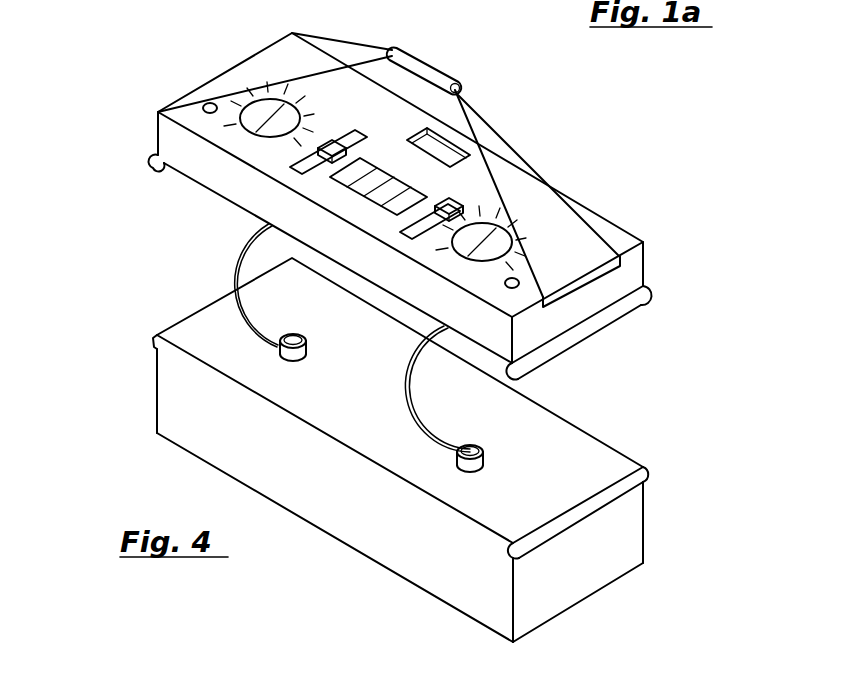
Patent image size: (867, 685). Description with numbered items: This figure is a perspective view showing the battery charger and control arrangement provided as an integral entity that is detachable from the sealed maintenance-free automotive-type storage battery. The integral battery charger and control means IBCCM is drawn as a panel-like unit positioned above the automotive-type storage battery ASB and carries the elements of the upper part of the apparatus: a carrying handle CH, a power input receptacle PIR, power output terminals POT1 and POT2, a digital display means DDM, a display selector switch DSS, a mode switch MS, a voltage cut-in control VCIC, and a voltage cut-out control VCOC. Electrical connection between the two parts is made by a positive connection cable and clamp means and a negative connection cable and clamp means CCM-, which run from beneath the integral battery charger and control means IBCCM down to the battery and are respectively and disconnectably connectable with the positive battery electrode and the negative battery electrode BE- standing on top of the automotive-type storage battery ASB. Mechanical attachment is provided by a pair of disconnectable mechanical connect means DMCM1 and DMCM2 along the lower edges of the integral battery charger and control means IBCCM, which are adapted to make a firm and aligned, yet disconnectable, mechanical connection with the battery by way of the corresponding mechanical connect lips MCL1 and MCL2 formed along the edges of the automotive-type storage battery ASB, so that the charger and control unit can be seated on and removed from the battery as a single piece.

The integral battery charger and control means IBCCM is at (630, 213).
The disconnectable mechanical connect means DMCM1 is at (153, 167).
The disconnectable mechanical connect means DMCM2 is at (620, 317).
The carrying handle CH is at (428, 64).
The power output terminal POT1 is at (208, 103).
The power output terminal POT2 is at (517, 280).
The voltage cut-in control VCIC is at (280, 101).
The voltage cut-out control VCOC is at (510, 222).
The display selector switch DSS is at (350, 138).
The mode switch MS is at (447, 199).
The digital display means DDM is at (372, 162).
The power input receptacle PIR is at (468, 166).
The automotive-type storage battery ASB is at (573, 610).
The mechanical connect lip MCL1 is at (150, 338).
The mechanical connect lip MCL2 is at (653, 472).
The negative connection cable and clamp means CCM- is at (425, 434).
The negative battery electrode BE- is at (487, 452).